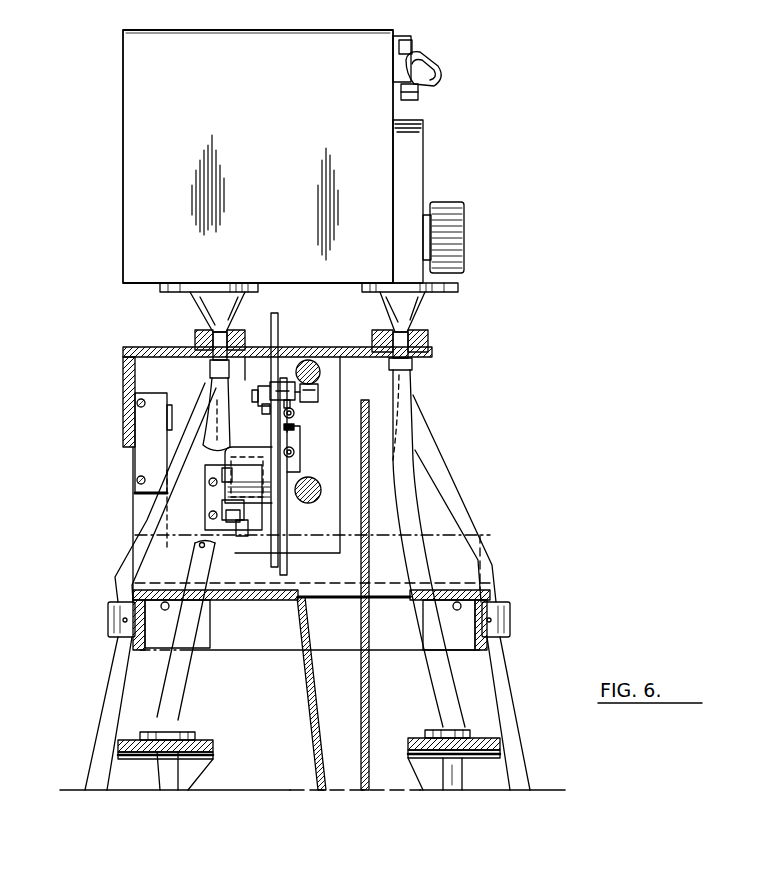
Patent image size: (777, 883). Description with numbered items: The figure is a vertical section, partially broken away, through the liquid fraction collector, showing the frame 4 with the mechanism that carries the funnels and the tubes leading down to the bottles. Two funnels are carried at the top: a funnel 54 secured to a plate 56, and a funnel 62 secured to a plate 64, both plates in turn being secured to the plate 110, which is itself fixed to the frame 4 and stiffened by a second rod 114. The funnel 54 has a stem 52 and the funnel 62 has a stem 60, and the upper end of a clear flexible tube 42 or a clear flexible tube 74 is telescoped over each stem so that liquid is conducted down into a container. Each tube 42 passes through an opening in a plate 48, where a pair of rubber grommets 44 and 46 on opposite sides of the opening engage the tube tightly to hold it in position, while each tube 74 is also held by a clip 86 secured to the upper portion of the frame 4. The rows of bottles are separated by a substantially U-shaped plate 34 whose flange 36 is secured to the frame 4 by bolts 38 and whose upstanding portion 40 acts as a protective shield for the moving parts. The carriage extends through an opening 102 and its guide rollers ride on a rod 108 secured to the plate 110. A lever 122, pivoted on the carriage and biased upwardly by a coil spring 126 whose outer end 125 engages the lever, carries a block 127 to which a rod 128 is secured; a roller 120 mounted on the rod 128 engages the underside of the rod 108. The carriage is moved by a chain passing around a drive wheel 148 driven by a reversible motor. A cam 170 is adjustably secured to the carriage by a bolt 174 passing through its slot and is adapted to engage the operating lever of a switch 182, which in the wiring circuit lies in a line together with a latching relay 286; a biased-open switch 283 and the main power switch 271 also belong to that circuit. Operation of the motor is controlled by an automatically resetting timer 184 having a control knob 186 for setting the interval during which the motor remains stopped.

The automatically resetting timer 184 is at (290, 105).
The control knob 186 is at (464, 236).
The main power switch 271 is at (440, 72).
The switch 283 is at (418, 96).
The funnel 54 is at (200, 313).
The plate 56 is at (196, 341).
The stem 52 is at (210, 371).
The funnel 62 is at (425, 311).
The plate 64 is at (428, 339).
The stem 60 is at (412, 368).
The plate 110 is at (146, 374).
The latching relay 286 is at (140, 467).
The clear flexible tube 74 is at (128, 555).
The clip 86 is at (108, 620).
The bolts 38 is at (168, 610).
The frame 4 is at (132, 672).
The clear flexible tube 42 is at (182, 683).
The plate 48 is at (212, 742).
The rubber grommet 44 is at (437, 731).
The rubber grommet 46 is at (442, 763).
The U-shaped plate 34 is at (304, 690).
The upstanding portion 40 is at (370, 430).
The flange 36 is at (243, 598).
The opening 102 is at (336, 357).
The lever 122 is at (270, 348).
The block 127 is at (284, 382).
The rod 128 is at (302, 384).
The coil spring 126 is at (262, 398).
The outer end 125 is at (268, 408).
The roller 120 is at (305, 404).
The rod 108 is at (320, 372).
The second rod 114 is at (308, 503).
The drive wheel 148 is at (298, 440).
The cam 170 is at (250, 460).
The bolt 174 is at (204, 500).
The switch 182 is at (245, 536).